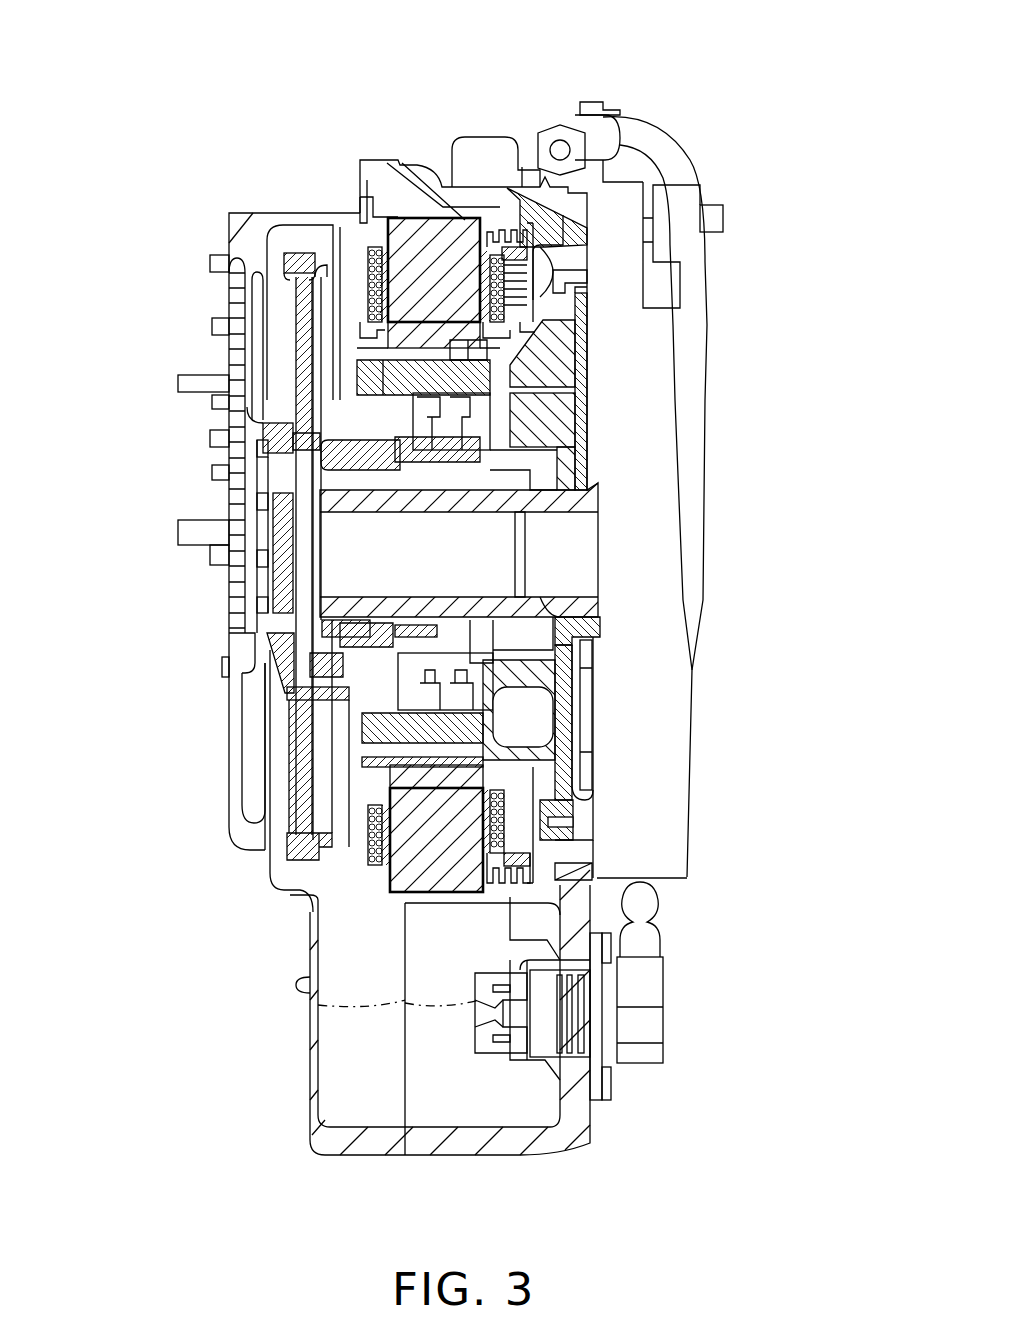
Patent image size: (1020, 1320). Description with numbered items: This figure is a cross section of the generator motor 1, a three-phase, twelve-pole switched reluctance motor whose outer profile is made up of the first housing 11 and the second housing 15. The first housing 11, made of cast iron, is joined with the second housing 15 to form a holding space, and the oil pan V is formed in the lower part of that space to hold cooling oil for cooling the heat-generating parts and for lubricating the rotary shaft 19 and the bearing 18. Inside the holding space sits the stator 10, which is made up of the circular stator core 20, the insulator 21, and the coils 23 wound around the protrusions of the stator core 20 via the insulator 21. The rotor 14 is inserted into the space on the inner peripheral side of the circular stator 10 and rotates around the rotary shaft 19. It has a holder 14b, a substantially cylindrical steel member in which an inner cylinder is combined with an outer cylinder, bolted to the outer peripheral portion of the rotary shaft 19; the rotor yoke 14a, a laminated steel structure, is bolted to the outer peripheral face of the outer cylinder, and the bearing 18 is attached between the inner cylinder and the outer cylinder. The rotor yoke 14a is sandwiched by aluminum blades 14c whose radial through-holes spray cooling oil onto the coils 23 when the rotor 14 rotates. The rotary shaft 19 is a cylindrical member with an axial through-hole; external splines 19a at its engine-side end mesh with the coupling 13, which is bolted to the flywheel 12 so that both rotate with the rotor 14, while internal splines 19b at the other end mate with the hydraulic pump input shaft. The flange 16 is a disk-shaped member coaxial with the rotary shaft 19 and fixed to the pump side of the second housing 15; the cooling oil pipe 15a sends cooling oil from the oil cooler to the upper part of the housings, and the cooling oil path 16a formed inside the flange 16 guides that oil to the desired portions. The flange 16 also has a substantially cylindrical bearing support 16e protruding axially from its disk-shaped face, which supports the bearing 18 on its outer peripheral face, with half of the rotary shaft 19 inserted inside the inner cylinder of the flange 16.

The generator motor 1 is at (300, 74).
The stator 10 is at (445, 208).
The first housing 11 is at (228, 200).
The flywheel 12 is at (308, 243).
The coupling 13 is at (343, 400).
The rotor 14 is at (417, 312).
The rotor yoke 14a is at (405, 340).
The holder 14b is at (349, 677).
The blades 14c is at (360, 326).
The second housing 15 is at (502, 180).
The cooling oil pipe 15a is at (670, 158).
The flange 16 is at (592, 413).
The cooling oil path 16a is at (578, 357).
The bearing support 16e is at (283, 423).
The bearing 18 is at (455, 408).
The rotary shaft 19 is at (598, 510).
The external splines 19a is at (327, 480).
The internal splines 19b is at (555, 605).
The stator core 20 is at (460, 840).
The insulator 21 is at (535, 247).
The coils 23 is at (385, 245).
The oil pan V is at (385, 1072).